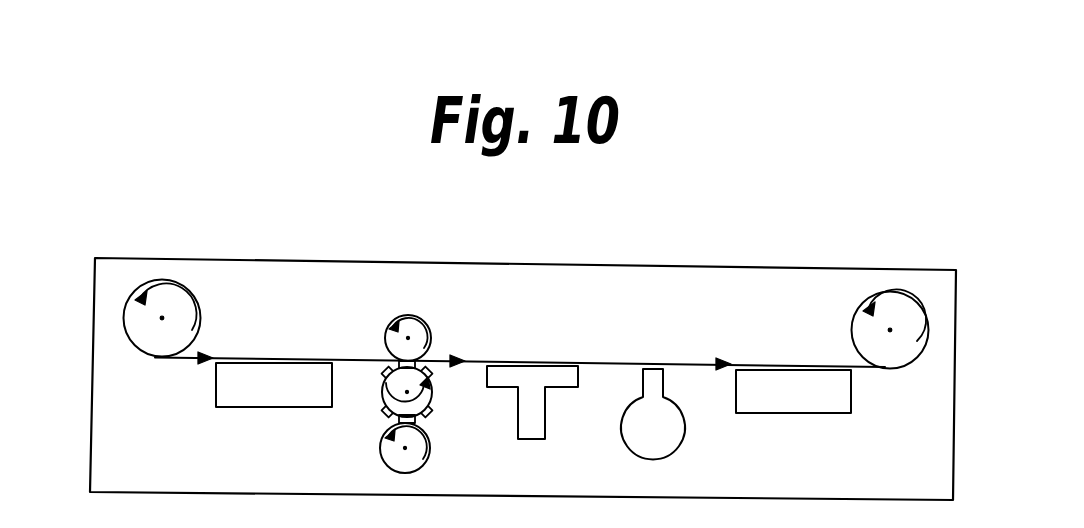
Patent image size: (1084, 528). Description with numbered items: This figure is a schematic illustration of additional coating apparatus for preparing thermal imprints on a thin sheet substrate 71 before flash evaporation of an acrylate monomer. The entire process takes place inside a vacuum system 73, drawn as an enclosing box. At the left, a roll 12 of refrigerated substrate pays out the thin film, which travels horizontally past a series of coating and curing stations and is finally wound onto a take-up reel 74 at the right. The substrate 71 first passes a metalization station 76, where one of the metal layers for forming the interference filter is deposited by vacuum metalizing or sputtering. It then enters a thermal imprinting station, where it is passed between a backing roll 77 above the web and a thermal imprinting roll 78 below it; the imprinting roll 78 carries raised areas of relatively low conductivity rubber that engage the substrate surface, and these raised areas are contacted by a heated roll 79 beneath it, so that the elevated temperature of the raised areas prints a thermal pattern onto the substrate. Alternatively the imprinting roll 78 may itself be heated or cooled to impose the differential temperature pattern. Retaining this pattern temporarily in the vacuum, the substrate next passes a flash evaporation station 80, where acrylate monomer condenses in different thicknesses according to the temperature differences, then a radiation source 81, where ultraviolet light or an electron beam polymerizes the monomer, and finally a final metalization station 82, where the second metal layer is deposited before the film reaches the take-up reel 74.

The supply roll 12 is at (138, 348).
The thin sheet substrate 71 is at (342, 358).
The vacuum system 73 is at (565, 240).
The take-up reel 74 is at (906, 368).
The metalization station 76 is at (237, 407).
The backing roll 77 is at (418, 318).
The thermal imprinting roll 78 is at (433, 400).
The heated roll 79 is at (430, 448).
The flash evaporation station 80 is at (546, 410).
The radiation source 81 is at (680, 447).
The final metalization station 82 is at (811, 413).